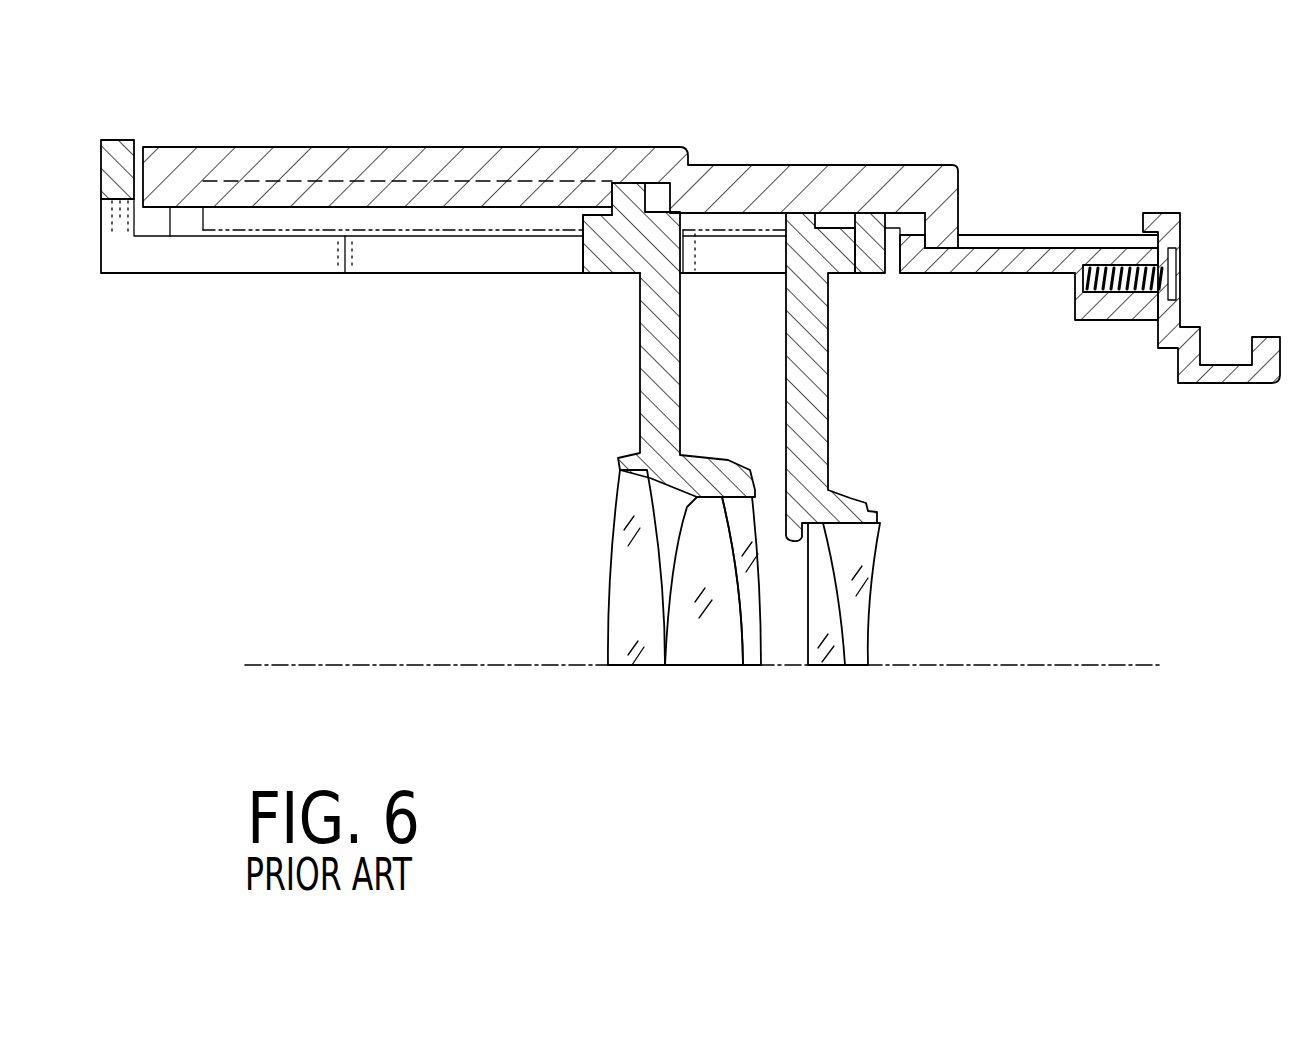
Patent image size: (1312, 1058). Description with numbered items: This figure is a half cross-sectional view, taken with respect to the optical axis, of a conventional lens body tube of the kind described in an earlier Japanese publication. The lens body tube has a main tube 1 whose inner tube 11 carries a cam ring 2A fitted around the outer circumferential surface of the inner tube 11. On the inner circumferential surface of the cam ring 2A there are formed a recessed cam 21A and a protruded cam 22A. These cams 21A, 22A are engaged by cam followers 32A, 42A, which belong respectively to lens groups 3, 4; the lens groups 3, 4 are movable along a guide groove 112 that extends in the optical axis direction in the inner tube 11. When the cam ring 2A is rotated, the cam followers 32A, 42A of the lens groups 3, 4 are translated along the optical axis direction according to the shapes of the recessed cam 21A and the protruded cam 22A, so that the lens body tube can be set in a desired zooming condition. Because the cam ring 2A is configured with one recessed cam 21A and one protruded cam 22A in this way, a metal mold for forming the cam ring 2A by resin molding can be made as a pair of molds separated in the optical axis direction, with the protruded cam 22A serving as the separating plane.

The main tube 1 is at (1063, 84).
The cam ring 2A is at (348, 147).
The recessed cam 21A is at (637, 197).
The protruded cam 22A is at (833, 222).
The cam follower 32A is at (603, 258).
The cam follower 42A is at (858, 250).
The guide groove 112 is at (243, 258).
The inner tube 11 is at (1045, 258).
The lens group 3 is at (684, 684).
The lens group 4 is at (848, 684).